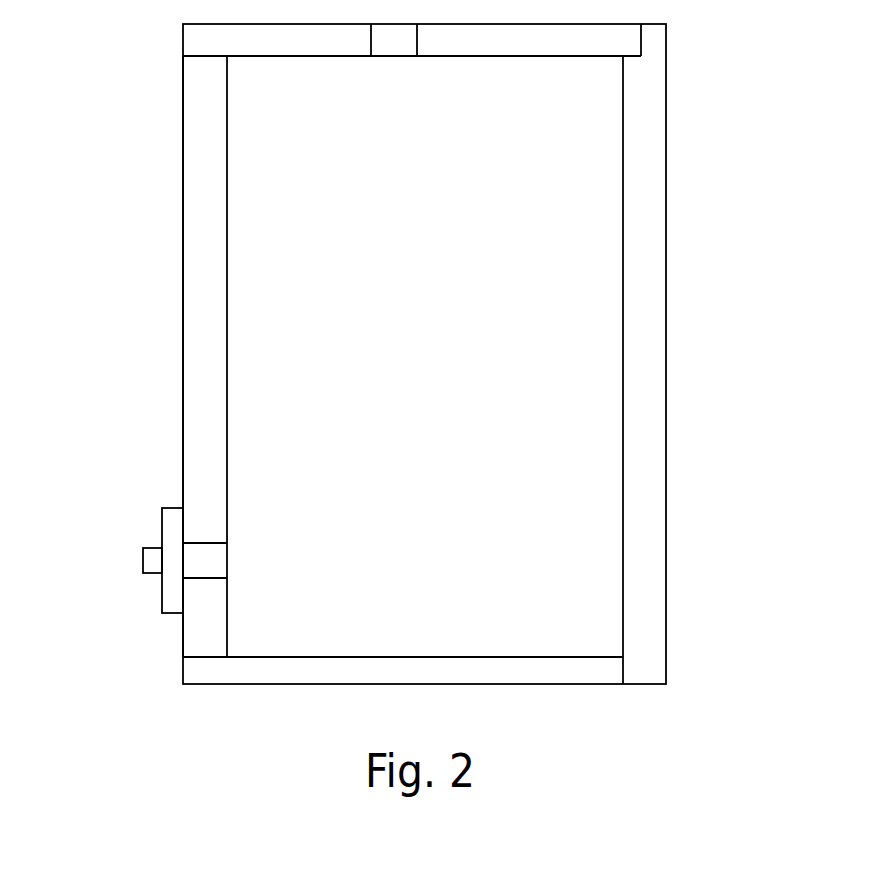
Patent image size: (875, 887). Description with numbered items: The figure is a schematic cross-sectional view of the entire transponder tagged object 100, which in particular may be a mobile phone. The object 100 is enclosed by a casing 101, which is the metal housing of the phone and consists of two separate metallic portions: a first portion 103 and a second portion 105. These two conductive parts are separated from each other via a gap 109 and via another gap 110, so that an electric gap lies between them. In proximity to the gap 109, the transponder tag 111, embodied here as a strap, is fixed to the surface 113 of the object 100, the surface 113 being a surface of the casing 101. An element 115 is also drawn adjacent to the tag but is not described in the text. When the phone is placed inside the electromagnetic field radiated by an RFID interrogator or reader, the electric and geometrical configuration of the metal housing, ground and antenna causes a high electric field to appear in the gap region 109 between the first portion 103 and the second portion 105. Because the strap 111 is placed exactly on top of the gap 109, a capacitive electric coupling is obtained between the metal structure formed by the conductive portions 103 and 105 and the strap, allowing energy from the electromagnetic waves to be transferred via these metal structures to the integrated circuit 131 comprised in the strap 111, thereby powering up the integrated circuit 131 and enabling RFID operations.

The transponder tagged object 100 is at (778, 110).
The casing 101 is at (652, 398).
The first portion of the casing 103 is at (212, 594).
The second portion of the casing 105 is at (212, 466).
The gap 109 is at (213, 562).
The another gap 110 is at (403, 43).
The transponder tag 111 is at (114, 694).
The surface 113 is at (183, 412).
The flange / mounting plate 115 is at (163, 509).
The integrated circuit 131 is at (144, 559).